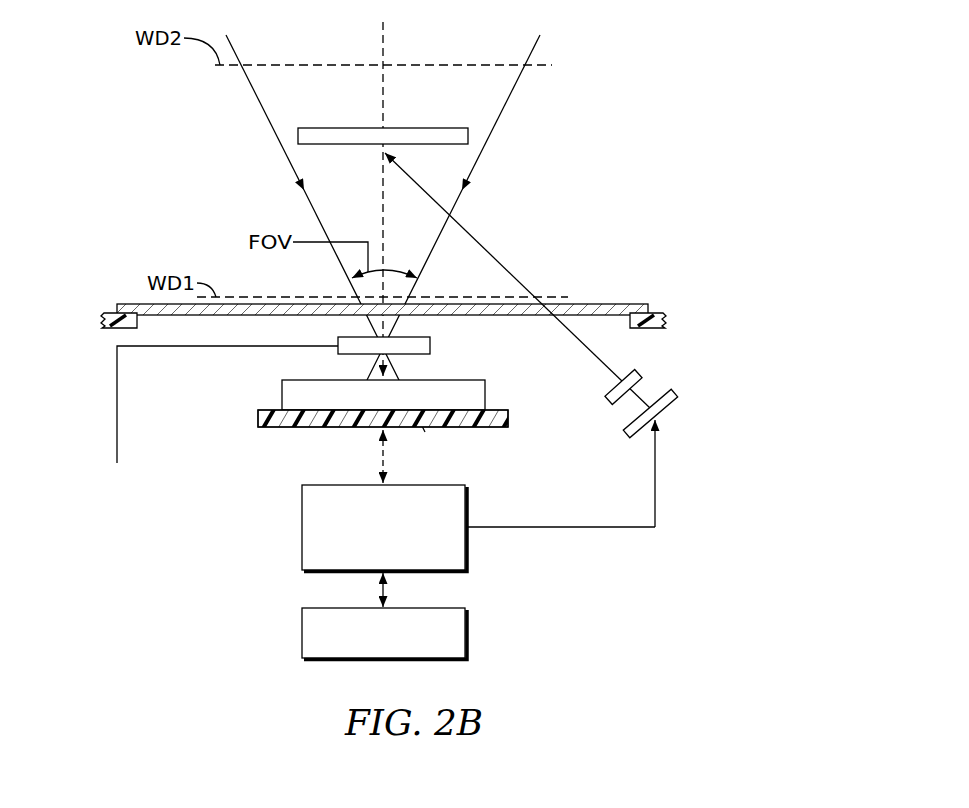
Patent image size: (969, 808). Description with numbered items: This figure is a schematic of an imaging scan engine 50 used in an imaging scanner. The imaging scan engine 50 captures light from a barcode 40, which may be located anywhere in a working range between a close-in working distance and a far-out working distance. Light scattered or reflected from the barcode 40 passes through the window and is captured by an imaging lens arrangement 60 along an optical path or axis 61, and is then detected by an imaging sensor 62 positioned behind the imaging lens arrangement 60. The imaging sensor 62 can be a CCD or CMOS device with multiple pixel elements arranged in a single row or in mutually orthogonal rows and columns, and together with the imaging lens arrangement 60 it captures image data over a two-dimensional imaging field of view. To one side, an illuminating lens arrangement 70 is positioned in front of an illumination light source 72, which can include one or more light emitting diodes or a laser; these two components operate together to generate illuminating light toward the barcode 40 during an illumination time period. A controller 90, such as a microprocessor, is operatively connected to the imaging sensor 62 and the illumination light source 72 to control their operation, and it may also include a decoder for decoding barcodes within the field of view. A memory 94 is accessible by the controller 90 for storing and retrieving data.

The barcode 40 is at (438, 128).
The imaging scan engine 50 is at (240, 399).
The imaging lens arrangement 60 is at (430, 342).
The optical path or axis 61 is at (384, 47).
The imaging sensor 62 is at (294, 380).
The illuminating lens arrangement 70 is at (640, 373).
The illumination light source 72 is at (670, 403).
The controller 90 is at (456, 485).
The memory 94 is at (456, 608).